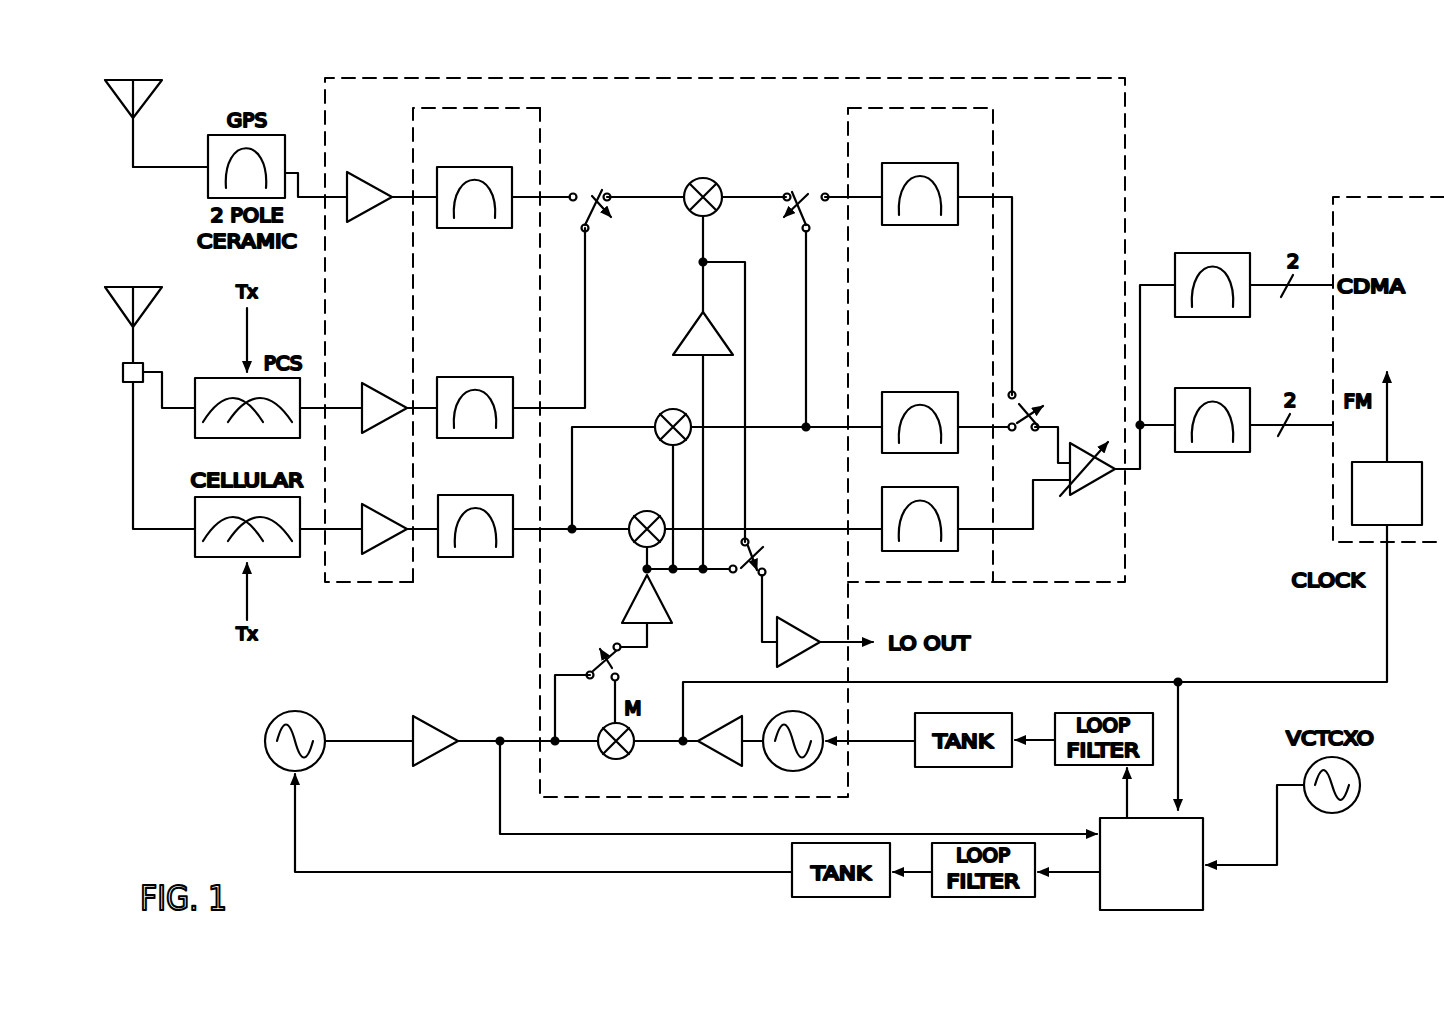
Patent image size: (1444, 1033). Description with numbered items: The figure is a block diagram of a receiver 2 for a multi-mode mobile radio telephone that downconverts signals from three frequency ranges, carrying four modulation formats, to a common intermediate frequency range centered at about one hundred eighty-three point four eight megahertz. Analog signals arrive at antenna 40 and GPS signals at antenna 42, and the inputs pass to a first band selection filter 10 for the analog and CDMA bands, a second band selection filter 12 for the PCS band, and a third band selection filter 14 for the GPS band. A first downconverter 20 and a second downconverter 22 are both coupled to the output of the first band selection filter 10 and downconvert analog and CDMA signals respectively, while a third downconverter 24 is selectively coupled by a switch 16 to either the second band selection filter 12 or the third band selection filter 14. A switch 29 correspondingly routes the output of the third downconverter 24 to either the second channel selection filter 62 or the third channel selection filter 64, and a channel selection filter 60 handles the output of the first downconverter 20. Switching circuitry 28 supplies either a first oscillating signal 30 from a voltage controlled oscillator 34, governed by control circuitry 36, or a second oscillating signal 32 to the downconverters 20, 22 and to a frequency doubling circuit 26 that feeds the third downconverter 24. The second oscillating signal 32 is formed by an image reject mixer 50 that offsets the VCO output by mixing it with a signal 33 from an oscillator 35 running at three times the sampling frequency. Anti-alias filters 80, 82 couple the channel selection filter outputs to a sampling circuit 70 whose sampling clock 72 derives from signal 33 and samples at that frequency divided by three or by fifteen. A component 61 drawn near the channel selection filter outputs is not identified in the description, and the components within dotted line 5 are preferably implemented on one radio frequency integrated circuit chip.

The receiver 2 is at (1341, 118).
The dotted line 5 is at (1127, 97).
The first band selection filter 10 is at (455, 557).
The second band selection filter 12 is at (437, 392).
The third band selection filter 14 is at (453, 228).
The switch 16 is at (598, 186).
The first downconverter 20 is at (647, 511).
The second downconverter 22 is at (673, 409).
The third downconverter 24 is at (703, 178).
The frequency doubling circuit 26 is at (693, 323).
The switching circuitry 28 is at (590, 657).
The switch 29 is at (792, 186).
The first oscillating signal 30 is at (548, 712).
The second oscillating signal 32 is at (620, 698).
The signal 33 is at (1072, 682).
The voltage controlled oscillator 34 is at (293, 711).
The oscillator 35 is at (773, 762).
The control circuitry 36 is at (1190, 818).
The antenna 40 is at (133, 348).
The antenna 42 is at (133, 140).
The image reject mixer 50 is at (598, 750).
The channel selection filter 60 is at (882, 513).
The variable gain amplifier 61 is at (1072, 497).
The second channel selection filter 62 is at (882, 412).
The third channel selection filter 64 is at (960, 185).
The sampling circuit 70 is at (1333, 197).
The sampling clock 72 is at (1393, 462).
The anti-alias filter 80 is at (1235, 452).
The anti-alias filter 82 is at (1235, 317).